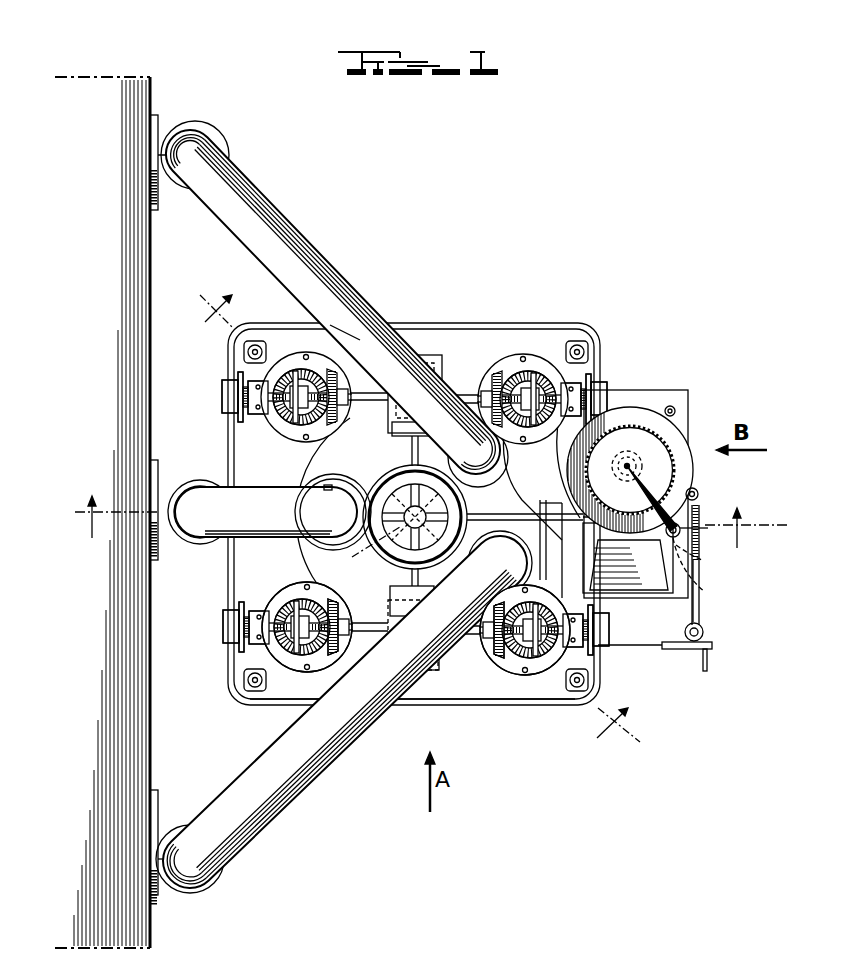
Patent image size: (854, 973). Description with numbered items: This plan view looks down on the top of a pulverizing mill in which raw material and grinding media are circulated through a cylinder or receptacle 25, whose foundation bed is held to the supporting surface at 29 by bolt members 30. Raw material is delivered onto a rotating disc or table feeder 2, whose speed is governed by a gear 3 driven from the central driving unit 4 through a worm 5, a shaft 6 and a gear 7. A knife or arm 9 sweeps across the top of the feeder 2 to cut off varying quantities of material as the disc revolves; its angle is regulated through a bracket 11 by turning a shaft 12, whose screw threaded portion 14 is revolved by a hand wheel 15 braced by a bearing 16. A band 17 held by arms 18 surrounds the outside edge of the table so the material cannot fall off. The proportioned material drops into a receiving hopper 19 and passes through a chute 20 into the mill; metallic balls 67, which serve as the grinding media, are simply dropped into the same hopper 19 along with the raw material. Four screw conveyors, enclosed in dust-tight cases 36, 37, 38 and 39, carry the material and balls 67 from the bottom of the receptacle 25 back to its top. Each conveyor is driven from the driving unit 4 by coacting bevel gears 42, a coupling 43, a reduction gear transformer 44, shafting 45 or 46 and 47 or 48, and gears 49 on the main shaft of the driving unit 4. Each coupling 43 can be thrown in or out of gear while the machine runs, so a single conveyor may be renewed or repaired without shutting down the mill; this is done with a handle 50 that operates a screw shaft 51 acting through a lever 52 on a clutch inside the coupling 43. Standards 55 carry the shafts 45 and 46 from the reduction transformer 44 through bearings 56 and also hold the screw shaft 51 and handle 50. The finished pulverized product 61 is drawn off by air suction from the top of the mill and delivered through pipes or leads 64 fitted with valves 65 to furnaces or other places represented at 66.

The disc or table feeder 2 is at (672, 450).
The gear 3 is at (688, 432).
The central driving unit 4 is at (424, 533).
The worm 5 is at (699, 588).
The shaft 6 is at (413, 518).
The gear 7 is at (498, 513).
The knife 9 is at (696, 488).
The bracket 11 is at (714, 518).
The shaft 12 is at (701, 598).
The screw threaded portion 14 is at (704, 548).
The hand wheel 15 is at (690, 660).
The bearing 16 is at (704, 633).
The band 17 is at (660, 393).
The arms 18 is at (675, 409).
The receiving hopper 19 is at (629, 565).
The chute 20 is at (506, 520).
The cylinder or receptacle 25 is at (300, 562).
The supporting surface 29 is at (495, 702).
The bolt members 30 is at (246, 690).
The dust-tight case 36 is at (578, 342).
The dust-tight case 37 is at (540, 677).
The dust-tight case 38 is at (289, 669).
The dust-tight case 39 is at (332, 326).
The coacting bevel gears 42 is at (338, 376).
The coupling 43 is at (287, 429).
The reduction gear transformer 44 is at (450, 350).
The shafting 45 is at (366, 406).
The shafting 46 is at (390, 590).
The shafting 47 is at (468, 408).
The shafting 48 is at (470, 622).
The gears 49 is at (396, 486).
The handle 50 is at (222, 392).
The screw shaft 51 is at (292, 612).
The lever 52 is at (518, 690).
The standards 55 is at (250, 414).
The bearings 56 is at (238, 398).
The finished pulverized product 61 is at (530, 604).
The pipes or leads 64 is at (206, 488).
The valves 65 is at (328, 485).
The furnaces 66 is at (106, 512).
The metallic balls 67 is at (296, 226).